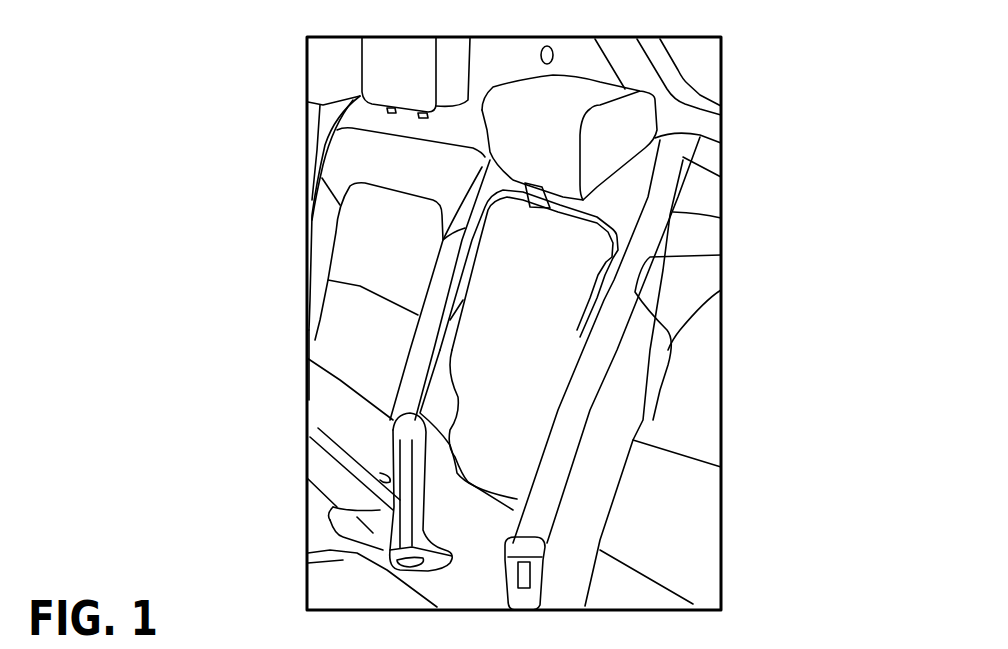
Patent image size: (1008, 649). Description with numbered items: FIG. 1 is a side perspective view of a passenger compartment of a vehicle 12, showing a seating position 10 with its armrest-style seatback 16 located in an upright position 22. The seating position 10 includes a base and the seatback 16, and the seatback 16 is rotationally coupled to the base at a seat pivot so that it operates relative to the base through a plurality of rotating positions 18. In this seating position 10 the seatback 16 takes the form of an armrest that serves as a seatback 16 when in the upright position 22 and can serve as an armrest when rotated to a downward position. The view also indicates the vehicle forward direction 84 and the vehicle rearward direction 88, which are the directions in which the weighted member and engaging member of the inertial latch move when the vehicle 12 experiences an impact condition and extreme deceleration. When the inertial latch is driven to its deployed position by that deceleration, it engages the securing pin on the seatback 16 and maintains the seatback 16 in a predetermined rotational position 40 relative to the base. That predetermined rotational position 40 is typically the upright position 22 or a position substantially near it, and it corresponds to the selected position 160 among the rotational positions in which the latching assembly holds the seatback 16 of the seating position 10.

The seating position 10 is at (305, 305).
The vehicle 12 is at (772, 82).
The seatback 16 is at (523, 358).
The rotating positions 18 is at (353, 365).
The upright position 22 is at (588, 391).
The predetermined rotational position 40 is at (305, 178).
The vehicle forward direction 84 is at (472, 327).
The vehicle rearward direction 88 is at (573, 303).
The selected position 160 is at (384, 433).